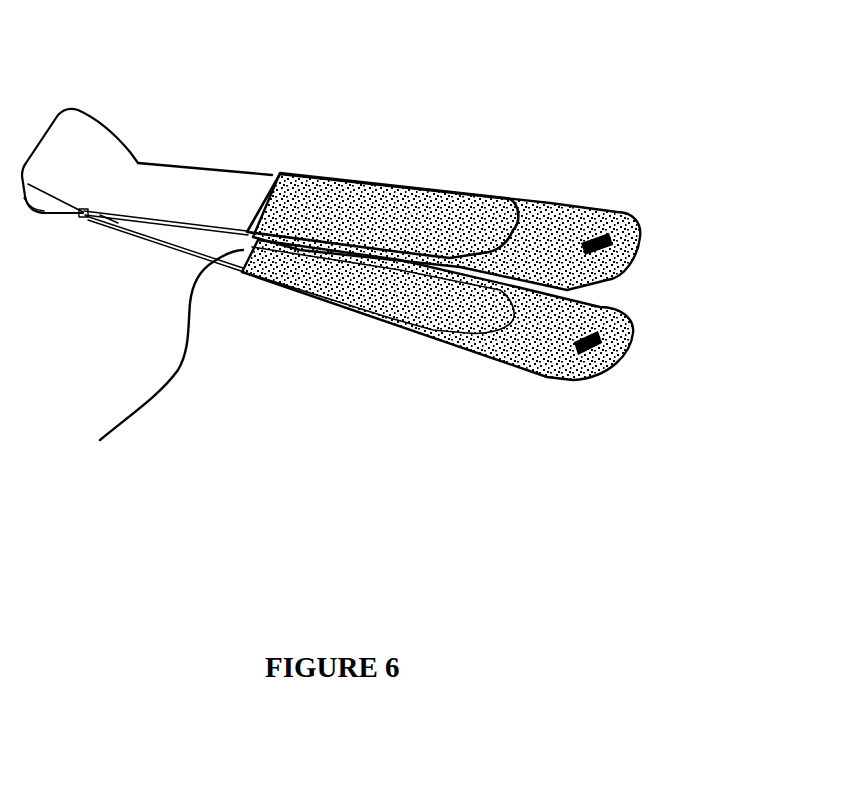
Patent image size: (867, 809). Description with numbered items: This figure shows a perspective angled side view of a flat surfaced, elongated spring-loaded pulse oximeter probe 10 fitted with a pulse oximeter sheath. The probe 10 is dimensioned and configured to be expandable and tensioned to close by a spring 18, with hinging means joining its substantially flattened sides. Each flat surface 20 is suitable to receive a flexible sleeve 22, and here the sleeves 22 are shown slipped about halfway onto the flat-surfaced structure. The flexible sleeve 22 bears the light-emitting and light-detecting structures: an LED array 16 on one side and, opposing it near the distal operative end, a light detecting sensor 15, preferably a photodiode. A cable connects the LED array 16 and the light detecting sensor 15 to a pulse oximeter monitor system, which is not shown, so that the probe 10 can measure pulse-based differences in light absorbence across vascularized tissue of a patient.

The probe 10 is at (184, 103).
The light detecting sensor 15 is at (640, 253).
The LED array 16 is at (636, 338).
The spring 18 is at (117, 223).
The flat surface 20 is at (228, 178).
The flexible sleeve 22 is at (550, 205).